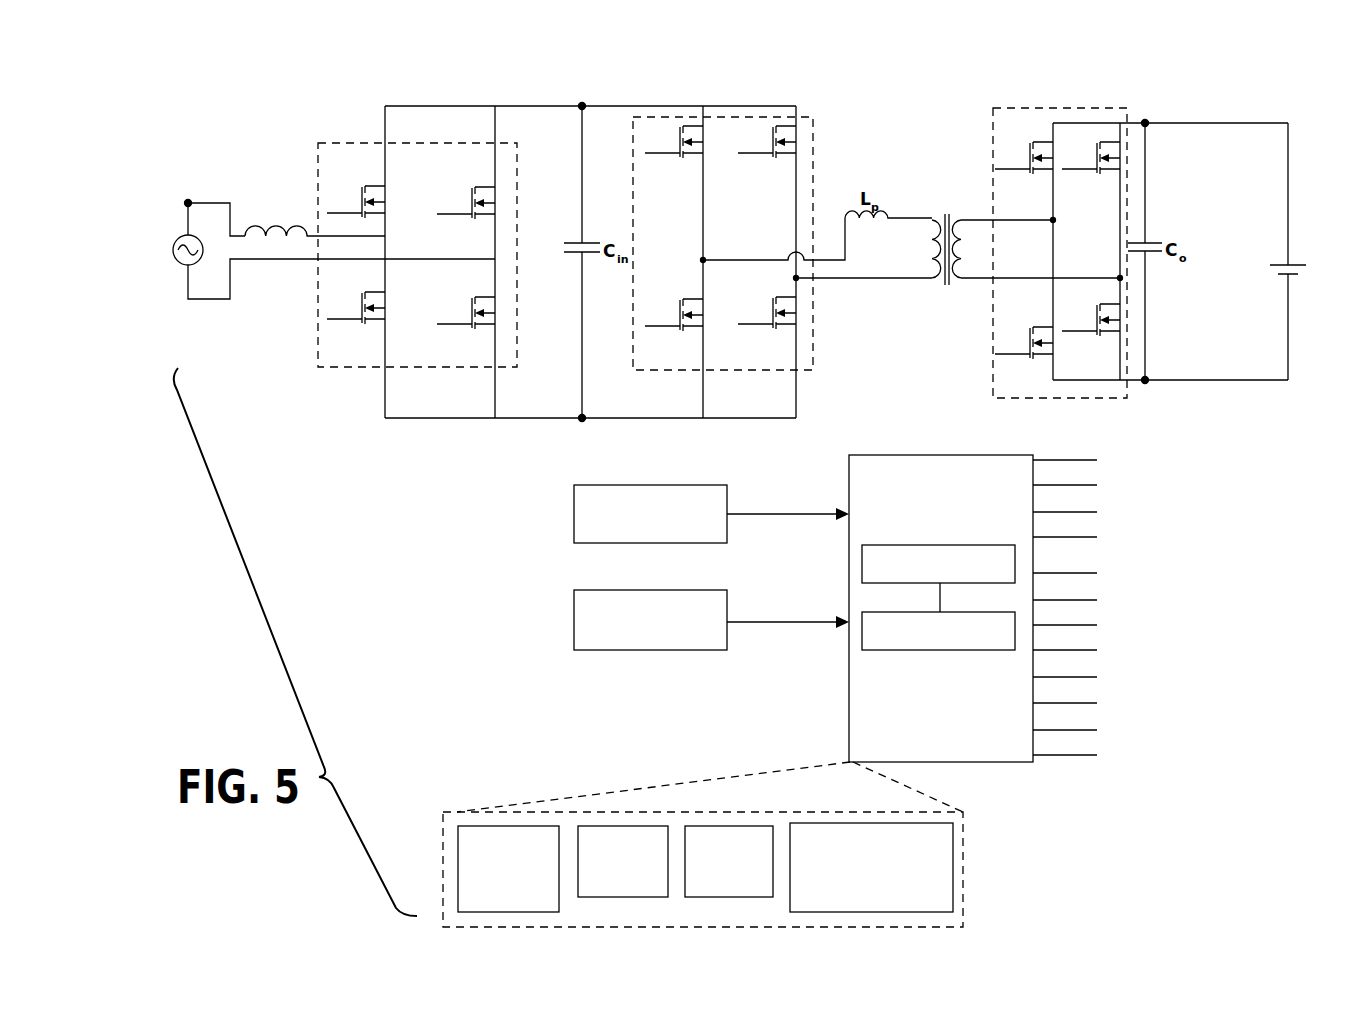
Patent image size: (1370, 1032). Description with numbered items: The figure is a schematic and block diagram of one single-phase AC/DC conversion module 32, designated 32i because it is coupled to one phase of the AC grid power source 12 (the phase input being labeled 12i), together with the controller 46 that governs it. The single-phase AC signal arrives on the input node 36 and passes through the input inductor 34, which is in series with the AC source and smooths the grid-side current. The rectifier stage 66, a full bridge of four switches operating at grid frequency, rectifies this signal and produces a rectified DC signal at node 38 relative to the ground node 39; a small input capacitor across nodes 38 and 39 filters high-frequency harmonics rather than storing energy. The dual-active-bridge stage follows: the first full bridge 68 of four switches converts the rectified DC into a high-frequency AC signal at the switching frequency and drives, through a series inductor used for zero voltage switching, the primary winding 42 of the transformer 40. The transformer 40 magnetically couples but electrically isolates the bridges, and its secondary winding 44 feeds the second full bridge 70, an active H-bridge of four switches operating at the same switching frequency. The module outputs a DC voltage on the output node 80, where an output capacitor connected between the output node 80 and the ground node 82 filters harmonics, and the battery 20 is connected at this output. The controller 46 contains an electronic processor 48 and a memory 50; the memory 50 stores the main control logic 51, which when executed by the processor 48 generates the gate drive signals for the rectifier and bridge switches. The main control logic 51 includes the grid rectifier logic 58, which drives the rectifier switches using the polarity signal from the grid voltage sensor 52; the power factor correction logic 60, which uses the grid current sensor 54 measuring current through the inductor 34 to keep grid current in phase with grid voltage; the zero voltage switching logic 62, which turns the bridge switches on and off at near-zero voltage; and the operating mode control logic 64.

The AC source 12 is at (325, 273).
The AC grid power source phase 12i is at (178, 263).
The battery 20 is at (1308, 252).
The AC/DC conversion module 32 is at (642, 219).
The single-phase AC/DC conversion module 32i is at (804, 66).
The input inductor 34 is at (300, 233).
The input node 36 is at (188, 202).
The rectified output node 38 is at (582, 104).
The ground node 39 is at (582, 420).
The transformer 40 is at (944, 204).
The primary winding 42 is at (936, 246).
The secondary winding 44 is at (960, 245).
The controller 46 is at (918, 455).
The electronic processor 48 is at (862, 558).
The memory 50 is at (862, 632).
The main control logic 51 is at (443, 842).
The grid voltage sensor 52 is at (574, 502).
The grid current sensor 54 is at (574, 612).
The grid rectifier logic 58 is at (480, 826).
The power factor correction logic 60 is at (578, 838).
The zero voltage switching logic 62 is at (745, 826).
The operating mode control logic 64 is at (953, 847).
The rectifier stage 66 is at (310, 332).
The first full bridge 68 is at (826, 304).
The second full bridge 70 is at (1110, 410).
The output node 80 is at (1148, 120).
The ground node 82 is at (1145, 392).